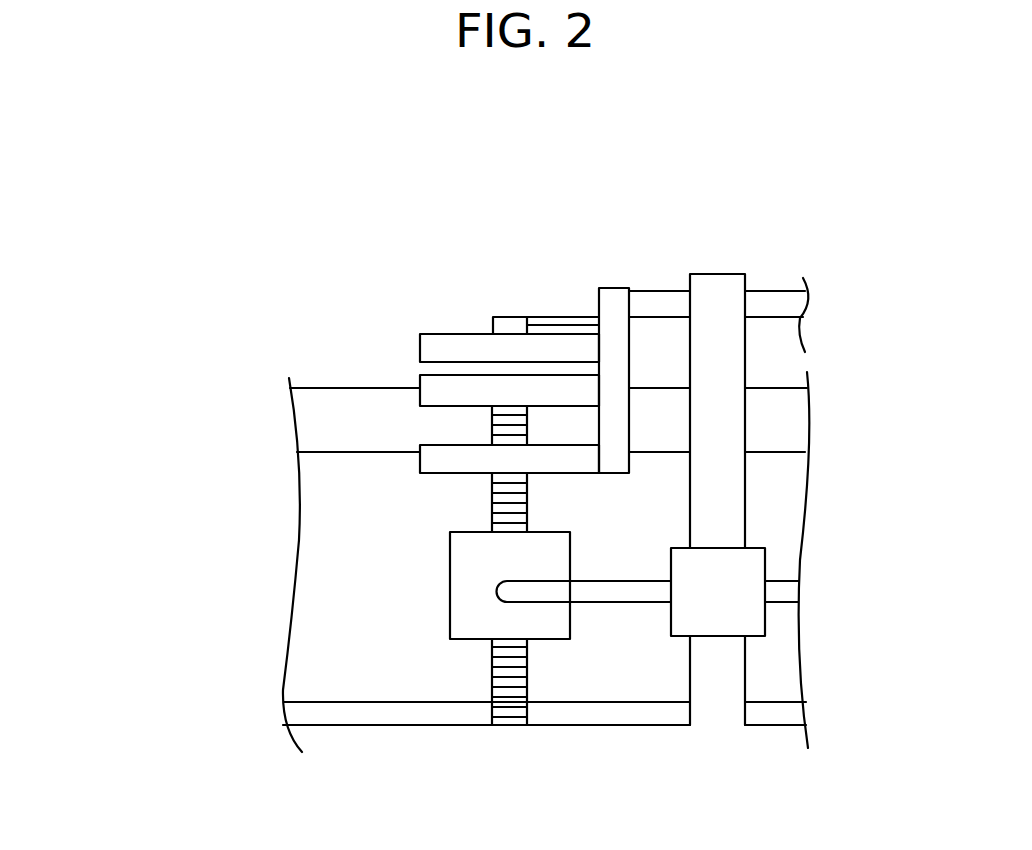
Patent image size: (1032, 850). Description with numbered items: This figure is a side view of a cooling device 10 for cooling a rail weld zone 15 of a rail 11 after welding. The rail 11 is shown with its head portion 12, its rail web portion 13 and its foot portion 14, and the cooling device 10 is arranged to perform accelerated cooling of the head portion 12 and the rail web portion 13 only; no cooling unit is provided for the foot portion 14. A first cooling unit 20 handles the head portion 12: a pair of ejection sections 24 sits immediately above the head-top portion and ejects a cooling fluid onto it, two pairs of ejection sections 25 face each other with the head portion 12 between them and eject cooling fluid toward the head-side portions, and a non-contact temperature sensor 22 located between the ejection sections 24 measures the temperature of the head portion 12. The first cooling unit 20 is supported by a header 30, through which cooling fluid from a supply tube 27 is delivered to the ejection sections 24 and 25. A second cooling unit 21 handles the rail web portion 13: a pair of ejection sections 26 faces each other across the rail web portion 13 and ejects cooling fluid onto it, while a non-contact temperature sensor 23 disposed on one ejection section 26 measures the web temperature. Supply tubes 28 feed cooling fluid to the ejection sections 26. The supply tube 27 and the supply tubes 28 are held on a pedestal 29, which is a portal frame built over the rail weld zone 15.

The cooling device 10 is at (430, 233).
The rail 11 is at (99, 408).
The head portion 12 is at (333, 425).
The rail web portion 13 is at (323, 543).
The foot portion 14 is at (325, 708).
The rail weld zone 15 is at (502, 655).
The first cooling unit 20 is at (453, 330).
The second cooling unit 21 is at (422, 566).
The non-contact temperature sensor 22 is at (508, 323).
The non-contact temperature sensor 23 is at (510, 524).
The ejection sections 24 is at (473, 350).
The ejection sections 25 is at (432, 452).
The ejection sections 26 is at (477, 595).
The supply tube 27 is at (657, 300).
The supply tubes 28 is at (622, 594).
The pedestal 29 is at (722, 497).
The header 30 is at (613, 298).